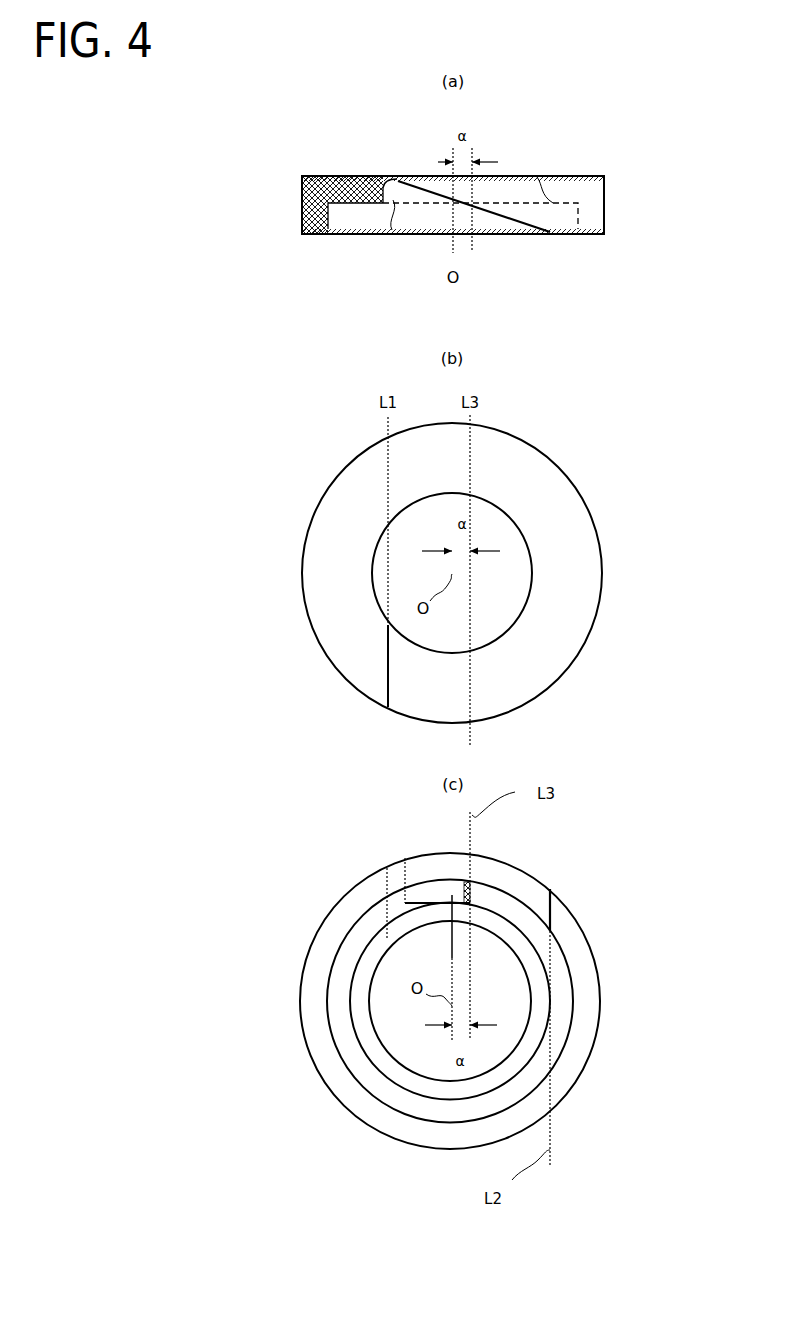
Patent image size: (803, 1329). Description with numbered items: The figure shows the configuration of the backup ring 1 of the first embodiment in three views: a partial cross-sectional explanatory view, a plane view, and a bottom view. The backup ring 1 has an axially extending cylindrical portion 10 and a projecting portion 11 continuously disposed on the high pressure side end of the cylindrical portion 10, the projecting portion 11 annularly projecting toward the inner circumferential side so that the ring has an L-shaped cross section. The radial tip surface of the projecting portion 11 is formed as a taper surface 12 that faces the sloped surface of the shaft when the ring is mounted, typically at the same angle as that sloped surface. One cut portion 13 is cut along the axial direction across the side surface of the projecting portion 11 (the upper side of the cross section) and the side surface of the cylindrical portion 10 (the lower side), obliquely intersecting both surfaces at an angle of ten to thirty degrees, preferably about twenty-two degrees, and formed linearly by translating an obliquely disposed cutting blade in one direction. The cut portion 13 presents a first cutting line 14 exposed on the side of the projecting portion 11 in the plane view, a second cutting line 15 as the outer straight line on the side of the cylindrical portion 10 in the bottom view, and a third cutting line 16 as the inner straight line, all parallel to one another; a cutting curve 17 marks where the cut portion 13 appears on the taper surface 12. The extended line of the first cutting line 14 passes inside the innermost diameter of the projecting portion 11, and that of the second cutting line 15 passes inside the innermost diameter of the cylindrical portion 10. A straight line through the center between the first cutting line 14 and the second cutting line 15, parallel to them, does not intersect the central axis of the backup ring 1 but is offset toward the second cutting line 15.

The backup ring 1 is at (586, 154).
The cylindrical portion 10 is at (302, 232).
The projecting portion 11 is at (357, 192).
The taper surface 12 is at (368, 178).
The cut portion 13 is at (480, 214).
The first cutting line 14 is at (388, 668).
The second cutting line 15 is at (552, 908).
The third cutting line 16 is at (482, 888).
The cutting curve 17 is at (403, 855).